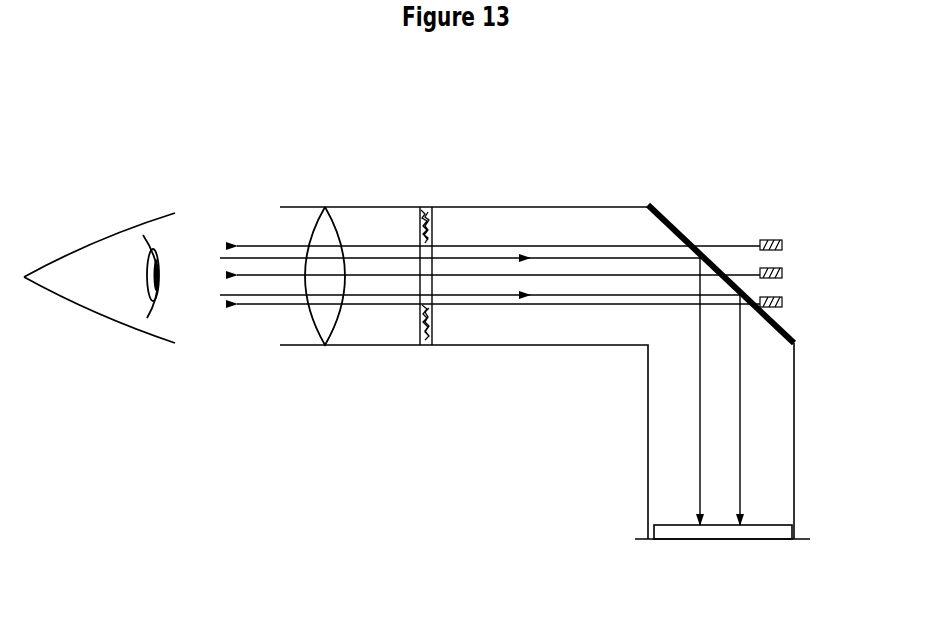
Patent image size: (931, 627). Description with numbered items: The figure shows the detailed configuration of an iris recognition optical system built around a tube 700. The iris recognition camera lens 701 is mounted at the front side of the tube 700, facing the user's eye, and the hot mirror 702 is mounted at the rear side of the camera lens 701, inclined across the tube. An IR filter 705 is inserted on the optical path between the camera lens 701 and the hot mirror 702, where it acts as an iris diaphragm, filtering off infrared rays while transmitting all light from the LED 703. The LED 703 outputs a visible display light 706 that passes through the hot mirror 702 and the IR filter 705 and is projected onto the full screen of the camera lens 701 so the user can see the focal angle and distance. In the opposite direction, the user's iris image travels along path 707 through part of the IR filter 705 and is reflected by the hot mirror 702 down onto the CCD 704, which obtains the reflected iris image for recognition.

The tube 700 is at (492, 205).
The iris recognition camera lens 701 is at (306, 217).
The hot mirror 702 is at (672, 215).
The LED 703 is at (782, 302).
The CCD 704 is at (687, 533).
The IR filter 705 is at (418, 226).
The light outputted from the LED 706 is at (540, 245).
The path of the user's iris image 707 is at (478, 295).